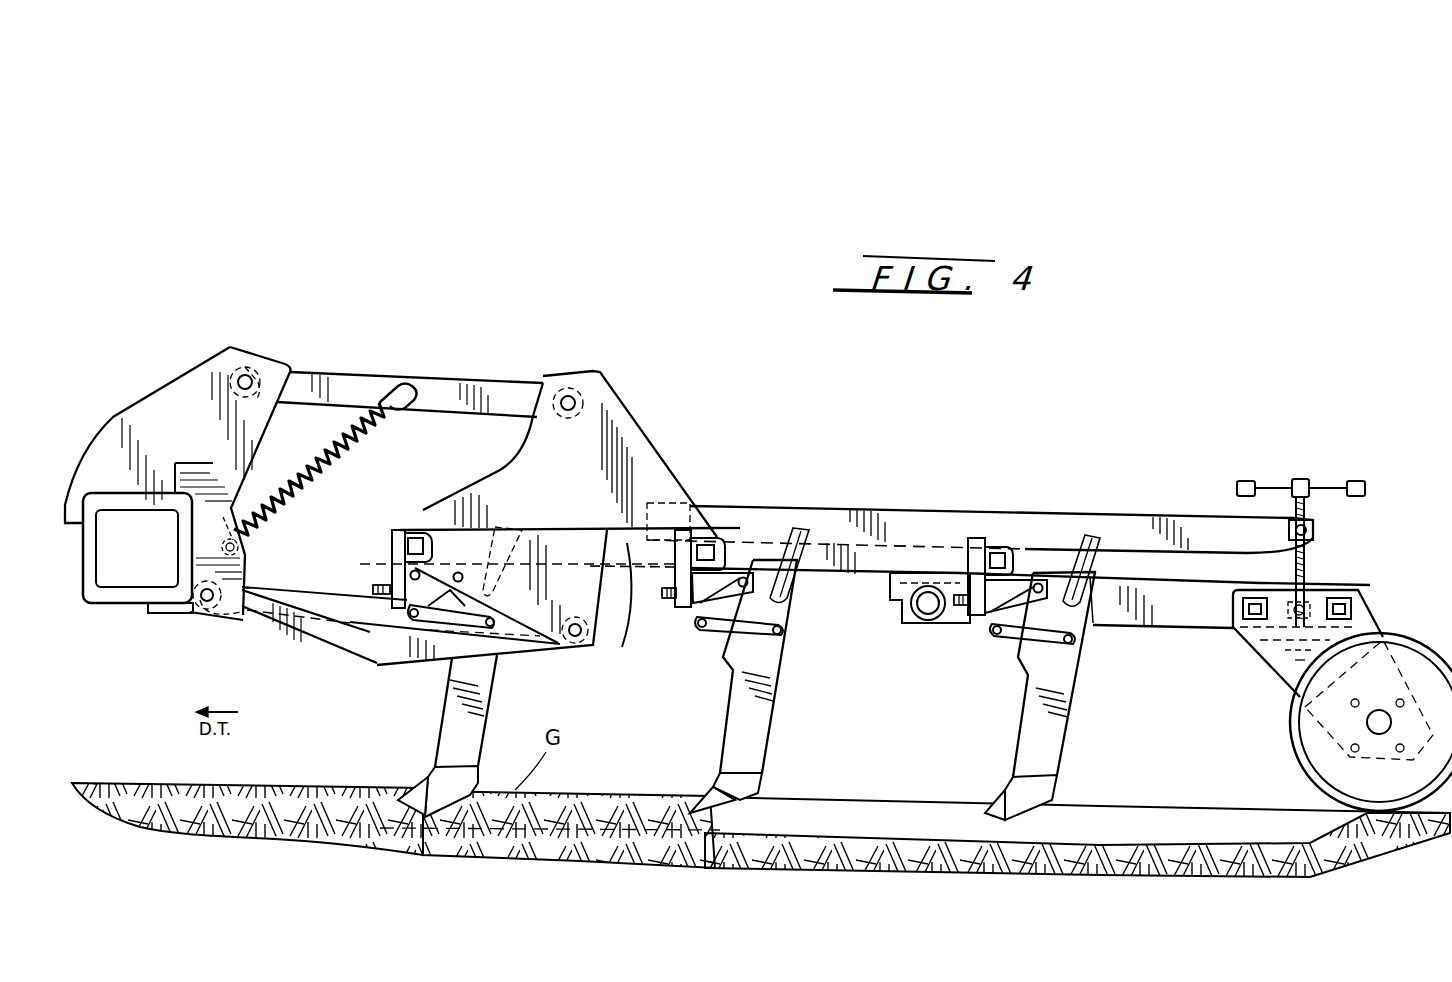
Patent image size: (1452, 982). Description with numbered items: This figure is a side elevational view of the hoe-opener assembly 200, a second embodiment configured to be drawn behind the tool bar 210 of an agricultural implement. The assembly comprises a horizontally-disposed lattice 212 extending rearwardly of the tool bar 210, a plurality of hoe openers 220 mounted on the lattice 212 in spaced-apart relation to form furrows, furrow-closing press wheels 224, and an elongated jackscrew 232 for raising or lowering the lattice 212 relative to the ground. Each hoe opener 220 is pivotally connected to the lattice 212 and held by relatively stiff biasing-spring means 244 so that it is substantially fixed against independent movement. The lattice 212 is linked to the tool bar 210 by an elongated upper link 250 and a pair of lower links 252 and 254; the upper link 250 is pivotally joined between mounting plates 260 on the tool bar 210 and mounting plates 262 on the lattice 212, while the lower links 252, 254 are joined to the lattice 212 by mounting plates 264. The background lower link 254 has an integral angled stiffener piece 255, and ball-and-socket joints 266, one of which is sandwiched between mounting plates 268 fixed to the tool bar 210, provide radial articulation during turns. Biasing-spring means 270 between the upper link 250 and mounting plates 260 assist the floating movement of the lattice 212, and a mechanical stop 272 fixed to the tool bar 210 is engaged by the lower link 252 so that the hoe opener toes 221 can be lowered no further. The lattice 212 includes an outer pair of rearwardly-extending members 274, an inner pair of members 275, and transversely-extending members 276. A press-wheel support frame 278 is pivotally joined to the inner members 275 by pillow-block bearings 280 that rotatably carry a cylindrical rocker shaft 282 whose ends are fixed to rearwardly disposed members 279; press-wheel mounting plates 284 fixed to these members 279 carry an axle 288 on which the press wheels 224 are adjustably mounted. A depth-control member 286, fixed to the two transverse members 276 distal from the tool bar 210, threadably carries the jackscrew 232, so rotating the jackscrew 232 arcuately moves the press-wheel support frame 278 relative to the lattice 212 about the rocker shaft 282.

The hoe-opener assembly 200 is at (1257, 431).
The tool bar 210 is at (80, 574).
The lattice 212 is at (820, 575).
The hoe opener 220 is at (455, 750).
The hoe opener toe 221 is at (388, 815).
The press wheel 224 is at (1326, 777).
The jackscrew 232 is at (1306, 560).
The biasing-spring means 244 is at (378, 585).
The upper link 250 is at (436, 392).
The lower link 252 is at (373, 650).
The lower link 254 is at (287, 592).
The angled stiffener piece 255 is at (338, 602).
The mounting plates 260 is at (190, 419).
The mounting plates 262 is at (538, 489).
The mounting plates 264 is at (549, 594).
The ball-and-socket joint 266 is at (262, 376).
The mounting plates 268 is at (210, 522).
The biasing-spring means 270 is at (332, 497).
The mechanical stop 272 is at (237, 620).
The rearwardly-extending members 274 is at (627, 609).
The rearwardly-extending members 275 is at (892, 565).
The transversely-extending members 276 is at (420, 527).
The press-wheel support frame 278 is at (1155, 625).
The elongated members 279 is at (1103, 618).
The pillow-block bearing 280 is at (890, 580).
The rocker shaft 282 is at (916, 615).
The press-wheel mounting plates 284 is at (1297, 677).
The depth-control member 286 is at (820, 517).
The axle 288 is at (1383, 712).